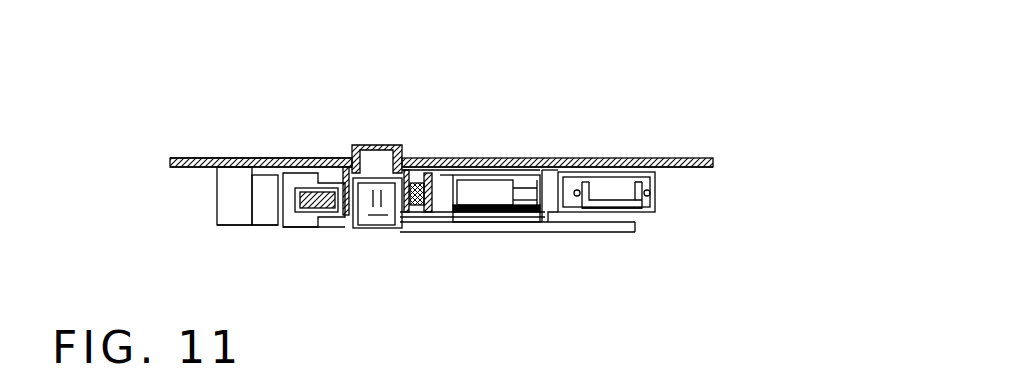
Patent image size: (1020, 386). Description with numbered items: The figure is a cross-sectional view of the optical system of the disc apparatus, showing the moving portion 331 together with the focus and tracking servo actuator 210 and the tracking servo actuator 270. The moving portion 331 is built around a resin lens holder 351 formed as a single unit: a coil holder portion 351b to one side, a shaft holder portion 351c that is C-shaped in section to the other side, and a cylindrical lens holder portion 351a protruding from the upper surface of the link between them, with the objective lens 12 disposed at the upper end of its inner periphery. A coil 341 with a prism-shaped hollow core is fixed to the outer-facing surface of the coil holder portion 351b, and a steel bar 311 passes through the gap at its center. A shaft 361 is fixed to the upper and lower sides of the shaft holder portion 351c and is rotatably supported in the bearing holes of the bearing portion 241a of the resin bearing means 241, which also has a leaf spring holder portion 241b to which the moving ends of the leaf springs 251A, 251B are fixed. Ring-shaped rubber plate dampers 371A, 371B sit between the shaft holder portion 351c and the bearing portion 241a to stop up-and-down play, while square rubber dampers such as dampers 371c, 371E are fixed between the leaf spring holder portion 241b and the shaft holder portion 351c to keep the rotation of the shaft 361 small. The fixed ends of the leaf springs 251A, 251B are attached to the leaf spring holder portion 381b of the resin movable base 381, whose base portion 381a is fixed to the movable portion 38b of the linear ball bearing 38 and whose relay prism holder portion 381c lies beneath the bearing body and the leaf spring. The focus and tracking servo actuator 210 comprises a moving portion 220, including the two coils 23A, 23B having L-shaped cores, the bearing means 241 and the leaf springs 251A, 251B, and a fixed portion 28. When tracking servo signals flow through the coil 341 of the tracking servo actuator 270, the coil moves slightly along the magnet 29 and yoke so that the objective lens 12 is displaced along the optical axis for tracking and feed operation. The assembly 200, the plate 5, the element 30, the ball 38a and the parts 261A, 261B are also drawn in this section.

The ultrasonic motor assembly 200 is at (181, 148).
The base plate 5 is at (218, 157).
The bearing block 30 is at (228, 216).
The magnet 29 is at (262, 217).
The fixed portion 28 is at (325, 298).
The coil 341 is at (333, 229).
The coil having L-shaped core 23A is at (298, 173).
The coil having L-shaped core 23B is at (323, 210).
The steel bar 311 is at (347, 218).
The objective lens 12 is at (377, 160).
The lens holder 351 is at (465, 299).
The lens holder portion 351a is at (363, 229).
The coil holder portion 351b is at (357, 229).
The shaft holder portion 351c is at (400, 229).
The bearing means 241 is at (545, 92).
The bearing portion 241a is at (406, 172).
The leaf spring holder portion 241b is at (429, 173).
The square rubber damper 371c is at (434, 180).
The ring-shaped rubber plate damper 371A is at (425, 216).
The ring-shaped rubber plate damper 371B is at (415, 220).
The square rubber damper 371E is at (503, 225).
The shaft 361 is at (470, 224).
The focus and tracking servo actuator 210 is at (481, 177).
The leaf spring 251A is at (521, 186).
The leaf spring 251B is at (526, 200).
The lead wire 261A is at (546, 178).
The lead wire 261B is at (551, 190).
The tracking servo actuator 270 is at (684, 187).
The linear ball bearing 38 is at (822, 180).
The ball bearing 38a is at (668, 189).
The movable portion 38b is at (646, 211).
The movable base 381 is at (790, 272).
The base portion 381a is at (641, 219).
The leaf spring holder portion 381b is at (600, 223).
The relay prism holder portion 381c is at (560, 229).
The moving portion 220 is at (715, 54).
The moving portion 331 is at (893, 338).